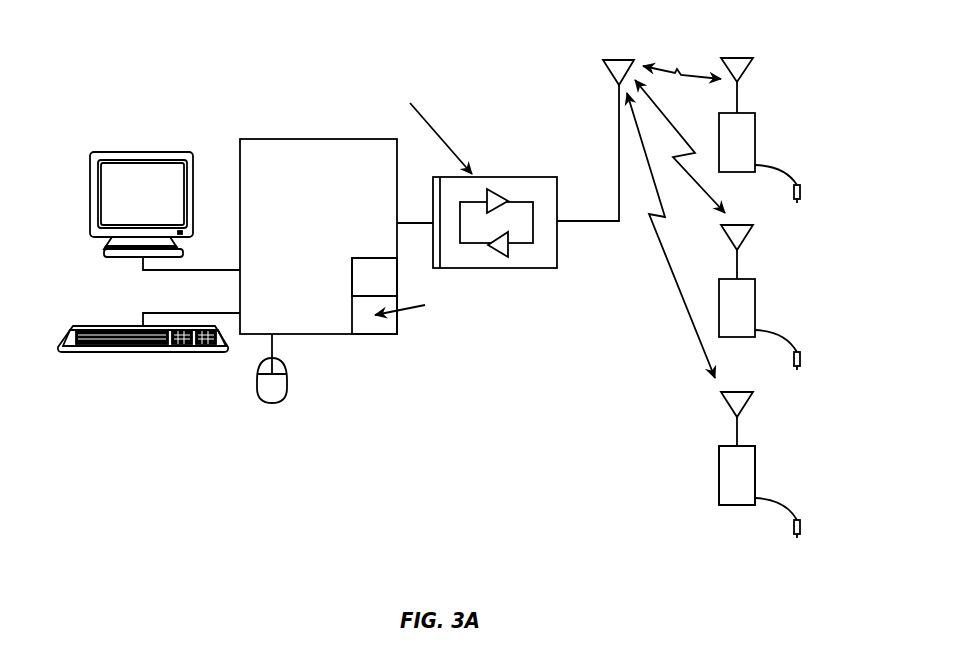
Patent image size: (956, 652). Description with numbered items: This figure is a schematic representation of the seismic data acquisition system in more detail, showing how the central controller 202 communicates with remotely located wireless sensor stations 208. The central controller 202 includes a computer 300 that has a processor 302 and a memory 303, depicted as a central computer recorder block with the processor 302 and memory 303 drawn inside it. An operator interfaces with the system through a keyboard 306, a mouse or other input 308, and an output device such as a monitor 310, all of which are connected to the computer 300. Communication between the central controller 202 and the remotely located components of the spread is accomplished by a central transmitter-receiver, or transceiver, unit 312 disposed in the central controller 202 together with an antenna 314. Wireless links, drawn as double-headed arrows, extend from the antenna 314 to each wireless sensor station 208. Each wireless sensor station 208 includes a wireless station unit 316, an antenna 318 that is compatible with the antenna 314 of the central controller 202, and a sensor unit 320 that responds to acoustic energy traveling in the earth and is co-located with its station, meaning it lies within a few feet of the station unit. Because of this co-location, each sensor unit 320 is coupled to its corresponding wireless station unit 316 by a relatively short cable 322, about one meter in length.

The central controller 202 is at (145, 412).
The wireless sensor station 208 is at (741, 113).
The computer 300 is at (250, 134).
The processor 302 is at (352, 312).
The memory 303 is at (368, 258).
The keyboard 306 is at (73, 327).
The mouse or other input 308 is at (288, 390).
The monitor 310 is at (106, 152).
The central transmitter-receiver unit 312 is at (523, 177).
The antenna 314 is at (619, 60).
The wireless station unit 316 is at (755, 473).
The antenna 318 is at (745, 405).
The sensor unit 320 is at (803, 522).
The cable 322 is at (790, 170).